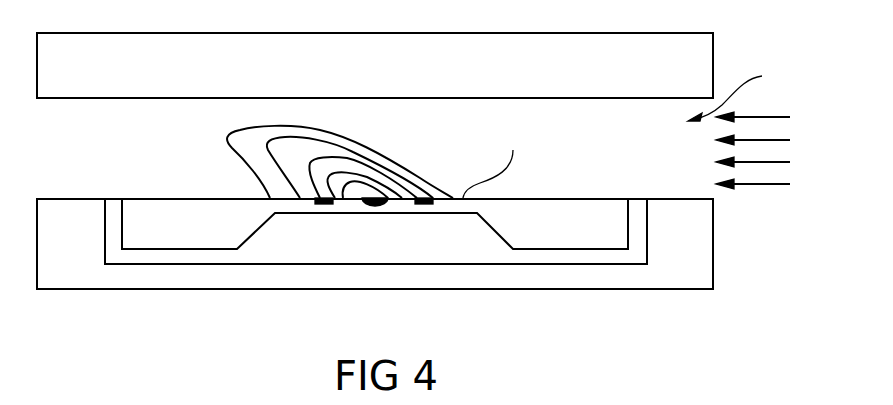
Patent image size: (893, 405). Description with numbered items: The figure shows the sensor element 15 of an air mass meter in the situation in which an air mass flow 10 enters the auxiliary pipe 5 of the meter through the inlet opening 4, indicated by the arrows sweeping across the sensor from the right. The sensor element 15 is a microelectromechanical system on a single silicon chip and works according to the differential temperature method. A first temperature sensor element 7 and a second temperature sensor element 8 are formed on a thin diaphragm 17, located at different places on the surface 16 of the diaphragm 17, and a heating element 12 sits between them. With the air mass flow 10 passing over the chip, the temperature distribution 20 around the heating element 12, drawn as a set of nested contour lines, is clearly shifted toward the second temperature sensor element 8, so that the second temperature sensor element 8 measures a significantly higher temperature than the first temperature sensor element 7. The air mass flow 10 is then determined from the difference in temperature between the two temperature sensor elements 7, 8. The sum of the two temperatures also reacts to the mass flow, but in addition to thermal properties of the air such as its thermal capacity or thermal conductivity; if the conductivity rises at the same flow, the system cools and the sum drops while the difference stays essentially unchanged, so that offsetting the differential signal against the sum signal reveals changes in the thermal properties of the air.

The inlet opening 4 is at (734, 91).
The auxiliary pipe 5 is at (713, 52).
The first temperature sensor element 7 is at (426, 206).
The second temperature sensor element 8 is at (323, 206).
The air mass flow 10 is at (753, 185).
The heating element 12 is at (375, 207).
The sensor element 15 is at (534, 190).
The surface 16 is at (499, 161).
The diaphragm 17 is at (470, 213).
The temperature distribution 20 is at (400, 157).